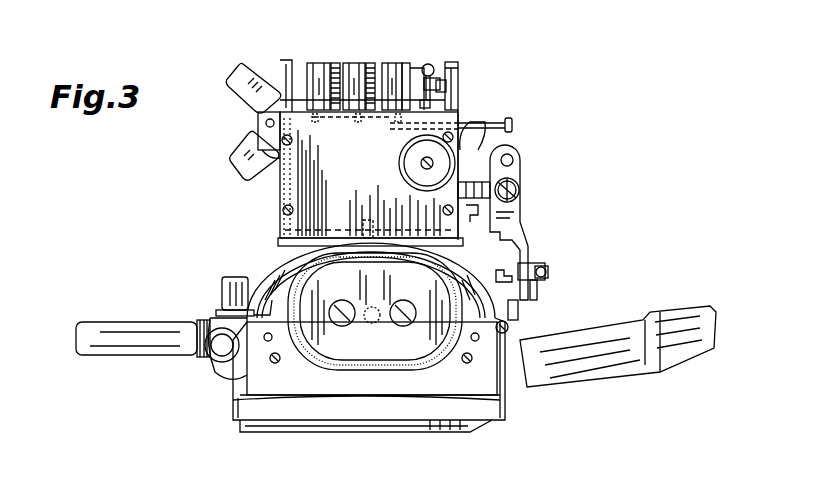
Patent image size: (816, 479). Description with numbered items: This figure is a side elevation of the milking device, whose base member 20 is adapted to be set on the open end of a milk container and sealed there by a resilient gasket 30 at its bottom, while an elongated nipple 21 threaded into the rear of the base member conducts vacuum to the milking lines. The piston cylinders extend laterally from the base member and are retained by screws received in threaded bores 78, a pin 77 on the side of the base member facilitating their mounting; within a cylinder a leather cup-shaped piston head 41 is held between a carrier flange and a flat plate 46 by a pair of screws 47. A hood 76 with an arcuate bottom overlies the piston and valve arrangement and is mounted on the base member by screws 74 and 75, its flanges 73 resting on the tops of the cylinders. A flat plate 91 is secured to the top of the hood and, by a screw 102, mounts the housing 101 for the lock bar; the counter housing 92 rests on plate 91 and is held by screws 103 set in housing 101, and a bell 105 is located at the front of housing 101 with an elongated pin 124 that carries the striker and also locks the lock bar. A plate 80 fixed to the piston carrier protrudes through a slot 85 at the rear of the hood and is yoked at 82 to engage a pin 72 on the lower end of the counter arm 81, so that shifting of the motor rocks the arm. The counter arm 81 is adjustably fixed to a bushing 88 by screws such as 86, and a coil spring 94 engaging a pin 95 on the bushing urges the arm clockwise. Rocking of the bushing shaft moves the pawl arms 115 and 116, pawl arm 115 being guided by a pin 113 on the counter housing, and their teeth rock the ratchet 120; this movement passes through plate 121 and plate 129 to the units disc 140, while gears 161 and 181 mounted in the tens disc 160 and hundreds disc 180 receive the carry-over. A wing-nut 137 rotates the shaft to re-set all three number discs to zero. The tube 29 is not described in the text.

The wing-nut 137 is at (238, 70).
The hundreds disc 180 is at (326, 62).
The gear 181 is at (336, 62).
The tens disc 160 is at (358, 62).
The gear 161 is at (372, 62).
The units disc 140 is at (396, 62).
The plate 129 is at (436, 48).
The plate 121 is at (433, 64).
The counter housing 92 is at (452, 64).
The pin 113 is at (440, 82).
The pawl arm 115 is at (446, 88).
The ratchet 120 is at (430, 104).
The pin 124 is at (498, 122).
The shaft 86 is at (258, 128).
The pawl arm 116 is at (420, 96).
The bell 105 is at (398, 164).
The housing 101 is at (308, 162).
The screws 103 is at (282, 212).
The screw 102 is at (364, 219).
The coil spring 94 is at (462, 192).
The pin 95 is at (477, 219).
The flat plate 91 is at (278, 242).
The bushing 88 is at (520, 188).
The counter arm 81 is at (516, 211).
The flanges 73 is at (296, 262).
The screw 74 is at (221, 288).
The yoke 82 is at (530, 262).
The pin 72 is at (548, 273).
The tube 29 is at (90, 322).
The plate 80 is at (538, 295).
The hood 76 is at (518, 308).
The screw 75 is at (508, 328).
The screws 47 is at (344, 326).
The pin 77 is at (245, 340).
The threaded bores 78 is at (275, 364).
The piston head 41 is at (312, 352).
The flat plate 46 is at (388, 358).
The base member 20 is at (233, 410).
The nipple 21 is at (628, 366).
The gasket 30 is at (470, 432).
The slot 85 is at (506, 268).